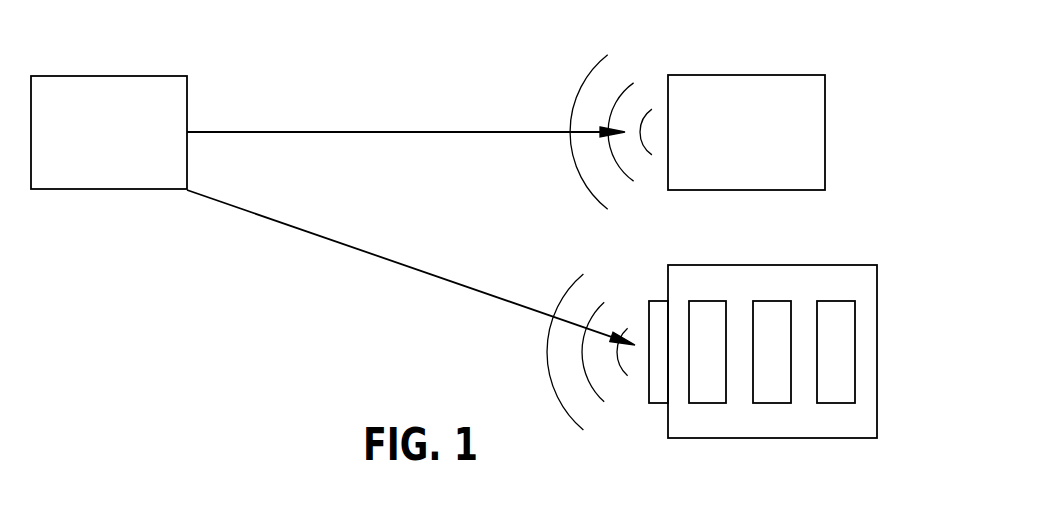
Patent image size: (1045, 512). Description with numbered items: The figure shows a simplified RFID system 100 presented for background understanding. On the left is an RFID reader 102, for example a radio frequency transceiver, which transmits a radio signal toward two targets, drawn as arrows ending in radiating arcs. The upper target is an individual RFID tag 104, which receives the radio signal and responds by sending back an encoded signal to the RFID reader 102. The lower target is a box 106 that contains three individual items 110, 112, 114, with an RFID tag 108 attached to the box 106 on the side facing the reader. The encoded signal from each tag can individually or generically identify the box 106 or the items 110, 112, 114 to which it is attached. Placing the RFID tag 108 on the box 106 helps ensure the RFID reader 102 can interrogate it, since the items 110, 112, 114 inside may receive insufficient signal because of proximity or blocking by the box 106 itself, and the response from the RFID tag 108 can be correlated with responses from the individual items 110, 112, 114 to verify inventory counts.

The RFID system 100 is at (712, 32).
The RFID reader 102 is at (108, 76).
The RFID tag 104 is at (825, 130).
The box 106 is at (877, 312).
The RFID tag 108 is at (648, 392).
The item 110 is at (706, 403).
The item 112 is at (770, 403).
The item 114 is at (835, 403).